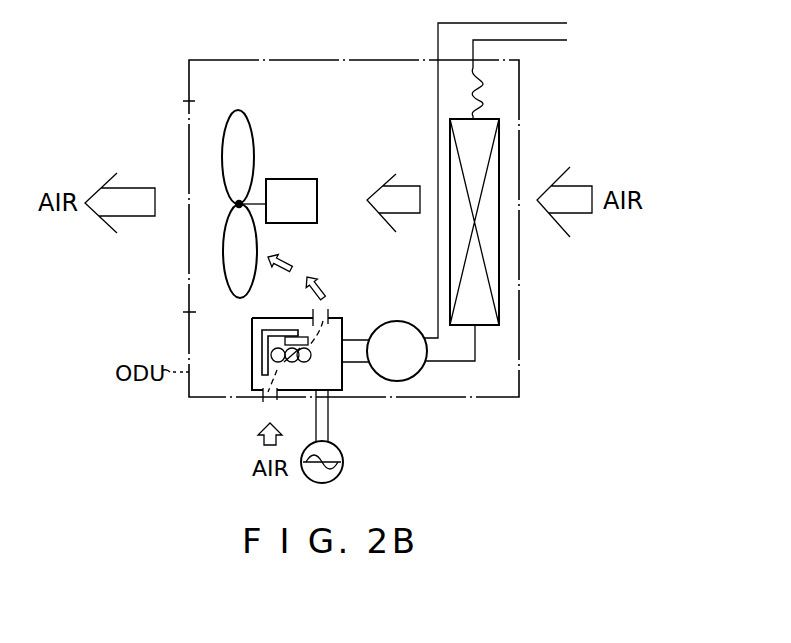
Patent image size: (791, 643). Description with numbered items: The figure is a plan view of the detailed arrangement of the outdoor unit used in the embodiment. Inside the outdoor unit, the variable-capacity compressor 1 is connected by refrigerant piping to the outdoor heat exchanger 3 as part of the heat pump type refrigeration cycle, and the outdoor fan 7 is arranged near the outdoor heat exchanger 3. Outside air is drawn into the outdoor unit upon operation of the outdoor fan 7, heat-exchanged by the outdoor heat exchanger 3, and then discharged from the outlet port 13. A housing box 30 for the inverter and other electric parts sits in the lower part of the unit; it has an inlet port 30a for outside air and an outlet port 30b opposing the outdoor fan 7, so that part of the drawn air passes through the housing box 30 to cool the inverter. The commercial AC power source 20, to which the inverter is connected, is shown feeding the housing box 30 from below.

The outlet port 13 is at (189, 127).
The outdoor fan 7 is at (256, 130).
The outdoor heat exchanger 3 is at (500, 280).
The variable-capacity compressor 1 is at (420, 372).
The housing box 30 is at (253, 338).
The outlet port 30b is at (329, 312).
The inlet port 30a is at (265, 402).
The commercial AC power source 20 is at (344, 452).